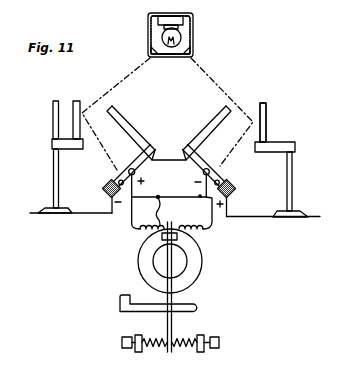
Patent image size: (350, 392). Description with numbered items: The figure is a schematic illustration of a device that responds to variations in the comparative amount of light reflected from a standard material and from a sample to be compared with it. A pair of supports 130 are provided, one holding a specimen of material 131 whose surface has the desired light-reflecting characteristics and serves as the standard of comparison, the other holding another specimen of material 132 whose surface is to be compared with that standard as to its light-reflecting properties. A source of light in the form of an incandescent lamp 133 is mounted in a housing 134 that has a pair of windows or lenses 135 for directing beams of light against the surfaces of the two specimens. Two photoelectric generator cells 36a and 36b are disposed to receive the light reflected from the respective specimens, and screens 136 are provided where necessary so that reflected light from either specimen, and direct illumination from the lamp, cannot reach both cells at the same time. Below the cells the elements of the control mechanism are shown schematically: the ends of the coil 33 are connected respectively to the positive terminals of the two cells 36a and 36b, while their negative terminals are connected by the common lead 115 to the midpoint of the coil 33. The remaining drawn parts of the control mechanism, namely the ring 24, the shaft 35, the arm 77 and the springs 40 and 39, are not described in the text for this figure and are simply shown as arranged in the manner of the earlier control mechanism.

The housing 134 is at (190, 26).
The incandescent lamp 133 is at (182, 38).
The windows or lenses 135 is at (151, 50).
The specimen of material 131 is at (81, 113).
The specimen of material 132 is at (258, 120).
The supports 130 is at (52, 145).
The screens 136 is at (213, 133).
The photoelectric generator cell 36a is at (110, 180).
The photoelectric generator cell 36b is at (230, 188).
The common lead 115 is at (163, 208).
The coil 33 is at (178, 240).
The ring 24 is at (197, 270).
The shaft 35 is at (172, 322).
The latch arm 77 is at (153, 307).
The left spring 40 is at (153, 346).
The right spring 39 is at (185, 347).